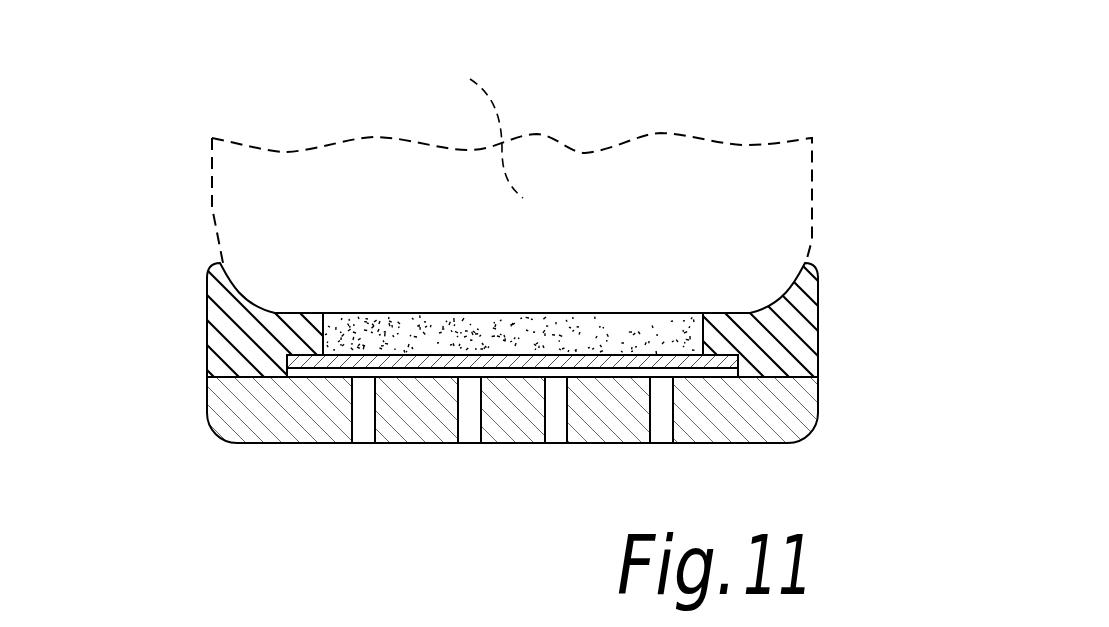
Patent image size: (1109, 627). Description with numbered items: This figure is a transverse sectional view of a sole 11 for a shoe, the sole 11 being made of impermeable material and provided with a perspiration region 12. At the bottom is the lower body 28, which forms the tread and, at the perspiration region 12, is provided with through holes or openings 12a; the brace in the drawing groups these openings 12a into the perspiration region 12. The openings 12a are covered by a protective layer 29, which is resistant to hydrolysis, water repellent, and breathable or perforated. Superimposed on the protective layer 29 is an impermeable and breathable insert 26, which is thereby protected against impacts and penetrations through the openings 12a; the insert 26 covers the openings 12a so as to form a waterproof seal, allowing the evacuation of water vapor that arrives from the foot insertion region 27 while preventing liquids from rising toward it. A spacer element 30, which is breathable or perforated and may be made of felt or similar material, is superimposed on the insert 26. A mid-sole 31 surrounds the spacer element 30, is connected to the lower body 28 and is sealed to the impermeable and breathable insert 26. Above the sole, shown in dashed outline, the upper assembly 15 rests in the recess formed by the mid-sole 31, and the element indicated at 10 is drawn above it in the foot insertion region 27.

The tooth 10 is at (644, 106).
The upper assembly 15 is at (199, 201).
The foot insertion region 27 is at (480, 130).
The mid-sole 31 is at (230, 318).
The sole 11 is at (832, 281).
The lower body 28 is at (834, 425).
The perspiration region 12 is at (672, 460).
The through holes or openings 12a is at (467, 395).
The protective layer 29 is at (721, 374).
The impermeable and breathable insert 26 is at (423, 352).
The spacer element 30 is at (647, 323).